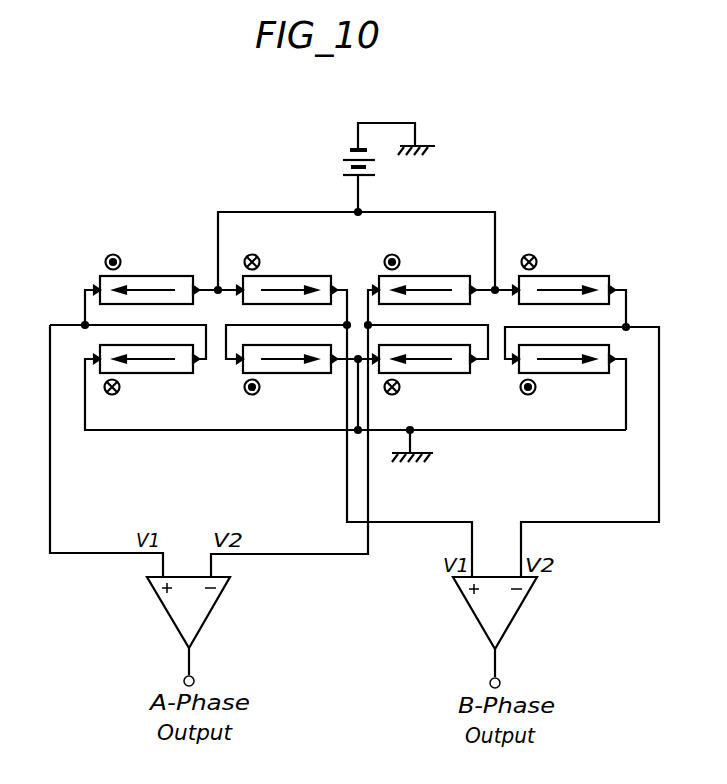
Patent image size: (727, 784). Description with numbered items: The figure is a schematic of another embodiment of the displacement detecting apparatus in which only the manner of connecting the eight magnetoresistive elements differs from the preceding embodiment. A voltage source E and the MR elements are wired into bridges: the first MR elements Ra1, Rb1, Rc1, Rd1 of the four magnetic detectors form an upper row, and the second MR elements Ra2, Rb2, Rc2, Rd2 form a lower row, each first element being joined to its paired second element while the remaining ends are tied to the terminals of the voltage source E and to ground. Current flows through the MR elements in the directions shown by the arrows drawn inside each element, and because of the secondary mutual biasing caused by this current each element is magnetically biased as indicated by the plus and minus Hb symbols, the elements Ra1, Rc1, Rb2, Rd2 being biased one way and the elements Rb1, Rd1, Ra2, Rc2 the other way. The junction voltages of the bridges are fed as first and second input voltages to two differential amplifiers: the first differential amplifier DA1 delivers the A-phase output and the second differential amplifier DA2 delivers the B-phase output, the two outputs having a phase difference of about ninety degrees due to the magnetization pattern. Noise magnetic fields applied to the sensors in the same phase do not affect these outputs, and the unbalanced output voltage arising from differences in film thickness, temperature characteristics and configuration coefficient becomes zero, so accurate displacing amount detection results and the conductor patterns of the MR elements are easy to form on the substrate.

The voltage source E is at (341, 166).
The first MR element Ra1 is at (166, 276).
The first MR element Rb1 is at (307, 276).
The first MR element Rc1 is at (442, 276).
The first MR element Rd1 is at (591, 276).
The second MR element Ra2 is at (166, 374).
The second MR element Rb2 is at (307, 374).
The second MR element Rc2 is at (450, 374).
The second MR element Rd2 is at (586, 374).
The first differential amplifier DA1 is at (218, 595).
The second differential amplifier DA2 is at (525, 595).